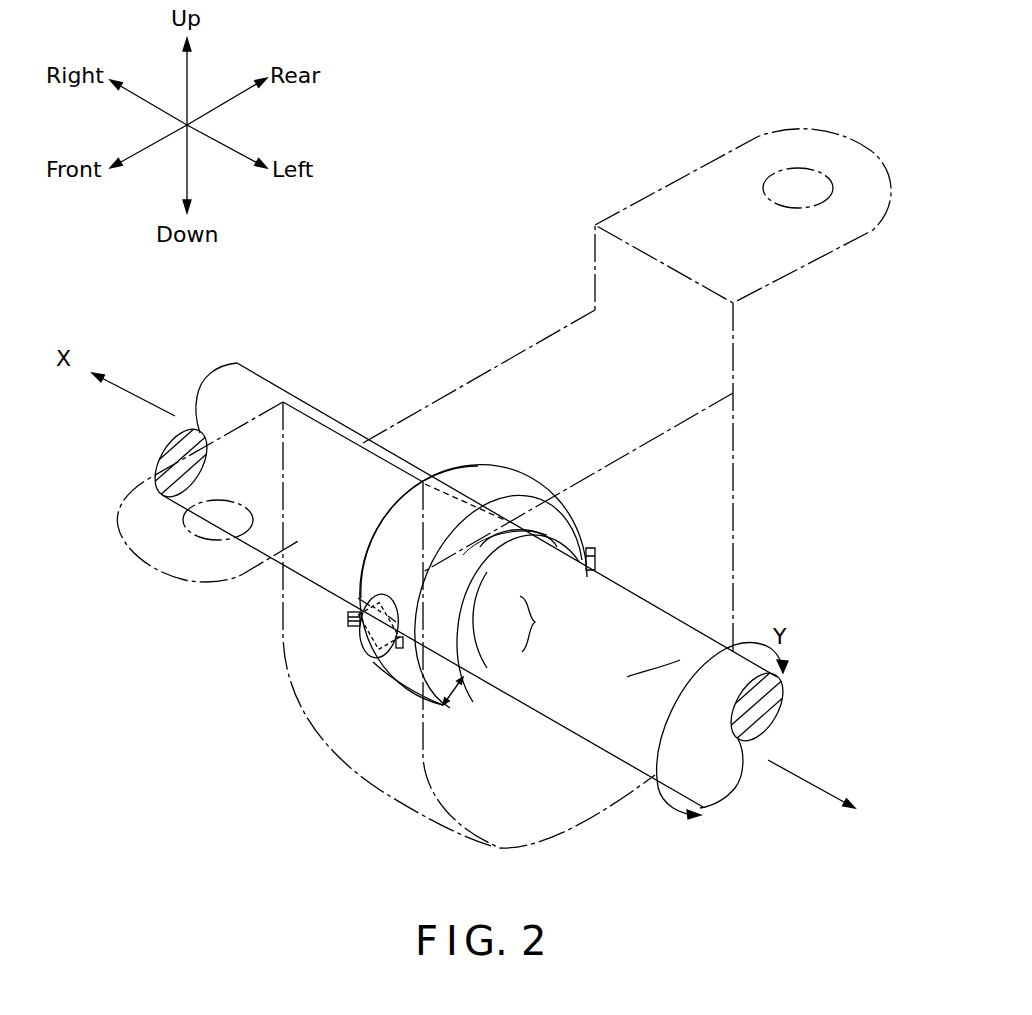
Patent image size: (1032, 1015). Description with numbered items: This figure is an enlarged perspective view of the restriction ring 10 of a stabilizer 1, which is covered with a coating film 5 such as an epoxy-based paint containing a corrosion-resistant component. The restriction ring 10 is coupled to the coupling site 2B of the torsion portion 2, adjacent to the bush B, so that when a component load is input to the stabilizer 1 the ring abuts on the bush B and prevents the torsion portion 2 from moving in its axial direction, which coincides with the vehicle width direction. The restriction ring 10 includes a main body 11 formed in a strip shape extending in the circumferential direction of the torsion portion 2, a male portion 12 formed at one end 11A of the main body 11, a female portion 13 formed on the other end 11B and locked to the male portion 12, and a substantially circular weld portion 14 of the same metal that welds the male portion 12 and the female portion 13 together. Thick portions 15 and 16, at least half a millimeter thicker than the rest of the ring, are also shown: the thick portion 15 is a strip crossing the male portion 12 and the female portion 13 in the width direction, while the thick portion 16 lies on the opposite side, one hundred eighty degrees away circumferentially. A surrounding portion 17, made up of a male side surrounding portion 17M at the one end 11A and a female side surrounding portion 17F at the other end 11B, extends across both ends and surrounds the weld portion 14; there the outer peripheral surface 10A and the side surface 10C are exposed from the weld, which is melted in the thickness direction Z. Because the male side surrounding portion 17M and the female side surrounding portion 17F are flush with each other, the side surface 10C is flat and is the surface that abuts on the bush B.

The stabilizer 1 is at (291, 390).
The torsion portion 2 is at (651, 630).
The coupling site 2B is at (505, 526).
The coating film 5 is at (627, 677).
The restriction ring 10 is at (440, 472).
The outer peripheral surface 10A is at (403, 670).
The side surface 10C is at (473, 690).
The main body 11 is at (482, 480).
The one end 11A is at (357, 637).
The other end 11B is at (355, 593).
The male portion 12 is at (370, 640).
The female portion 13 is at (375, 597).
The weld portion 14 is at (397, 617).
The thick portion 15 is at (348, 620).
The thick portion 16 is at (598, 565).
The surrounding portion 17 is at (542, 624).
The female side surrounding portion 17F is at (403, 613).
The male side surrounding portion 17M is at (407, 657).
The bush B is at (737, 502).
The thickness direction Z is at (450, 720).